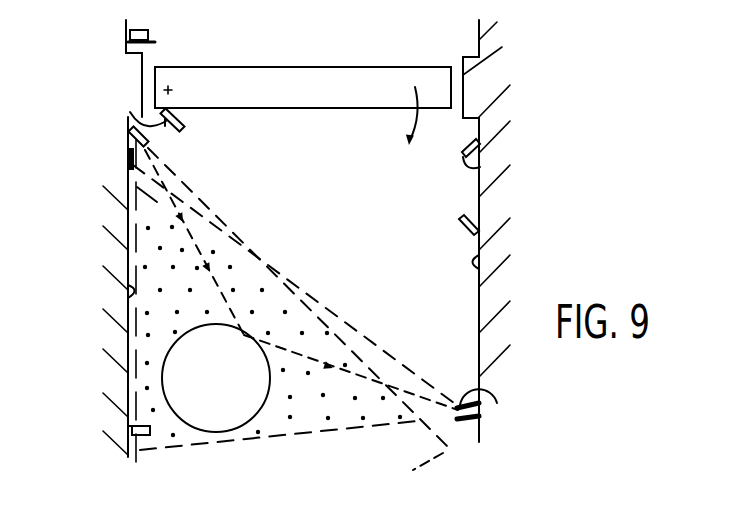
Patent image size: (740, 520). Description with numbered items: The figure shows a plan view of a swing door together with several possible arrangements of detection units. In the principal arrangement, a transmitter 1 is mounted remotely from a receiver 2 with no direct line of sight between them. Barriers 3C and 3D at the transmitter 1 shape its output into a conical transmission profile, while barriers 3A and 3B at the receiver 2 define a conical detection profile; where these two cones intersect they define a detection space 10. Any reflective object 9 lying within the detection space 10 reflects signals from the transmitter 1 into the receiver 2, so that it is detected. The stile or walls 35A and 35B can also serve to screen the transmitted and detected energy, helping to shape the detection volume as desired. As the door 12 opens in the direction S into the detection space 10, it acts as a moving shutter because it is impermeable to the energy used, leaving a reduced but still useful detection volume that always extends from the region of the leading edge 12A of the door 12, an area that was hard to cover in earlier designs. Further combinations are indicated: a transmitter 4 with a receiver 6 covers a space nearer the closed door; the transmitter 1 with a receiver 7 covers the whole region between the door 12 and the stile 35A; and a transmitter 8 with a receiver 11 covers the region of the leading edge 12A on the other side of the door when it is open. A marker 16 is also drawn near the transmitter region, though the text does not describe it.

The transmitter 1 is at (130, 144).
The receiver 2 is at (480, 428).
The barrier 3A is at (480, 400).
The barrier 3B is at (462, 420).
The barrier 3C is at (128, 160).
The barrier 3D is at (130, 129).
The transmitter 4 is at (480, 166).
The receiver 6 is at (128, 431).
The receiver 7 is at (140, 116).
The transmitter 8 is at (126, 36).
The object 9 is at (222, 392).
The detection space 10 is at (310, 420).
The receiver 11 is at (480, 215).
The door 12 is at (322, 95).
The leading edge 12A is at (455, 78).
The light emitting element 16 is at (155, 99).
The stile or wall 35A is at (128, 293).
The stile or wall 35B is at (480, 256).
The direction S is at (408, 131).